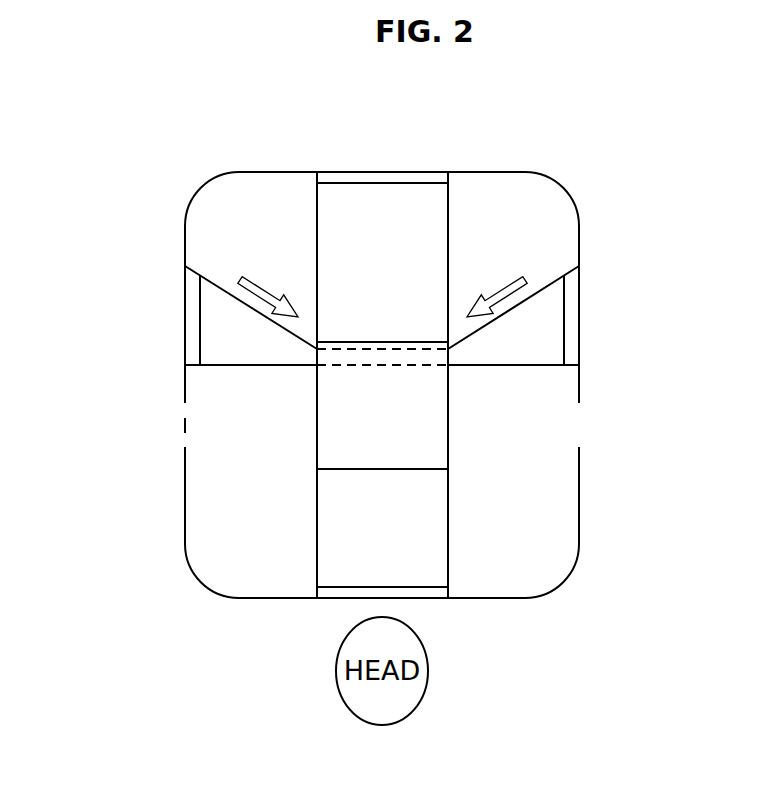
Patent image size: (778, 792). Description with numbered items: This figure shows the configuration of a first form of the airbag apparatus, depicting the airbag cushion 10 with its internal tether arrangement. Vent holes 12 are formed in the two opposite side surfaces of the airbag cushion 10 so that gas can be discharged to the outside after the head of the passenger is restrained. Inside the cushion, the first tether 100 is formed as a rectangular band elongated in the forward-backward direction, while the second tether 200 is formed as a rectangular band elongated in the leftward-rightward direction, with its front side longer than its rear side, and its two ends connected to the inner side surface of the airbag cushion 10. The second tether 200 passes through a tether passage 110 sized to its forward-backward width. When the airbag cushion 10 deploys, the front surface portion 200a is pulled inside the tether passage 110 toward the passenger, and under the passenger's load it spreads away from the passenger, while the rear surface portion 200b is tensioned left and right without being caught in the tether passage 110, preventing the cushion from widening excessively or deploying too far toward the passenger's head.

The airbag cushion 10 is at (620, 254).
The vent hole 12 is at (183, 427).
The first tether 100 is at (383, 218).
The tether passage 110 is at (412, 428).
The second tether 200 is at (227, 328).
The front surface portion 200a is at (224, 284).
The rear surface portion 200b is at (235, 366).